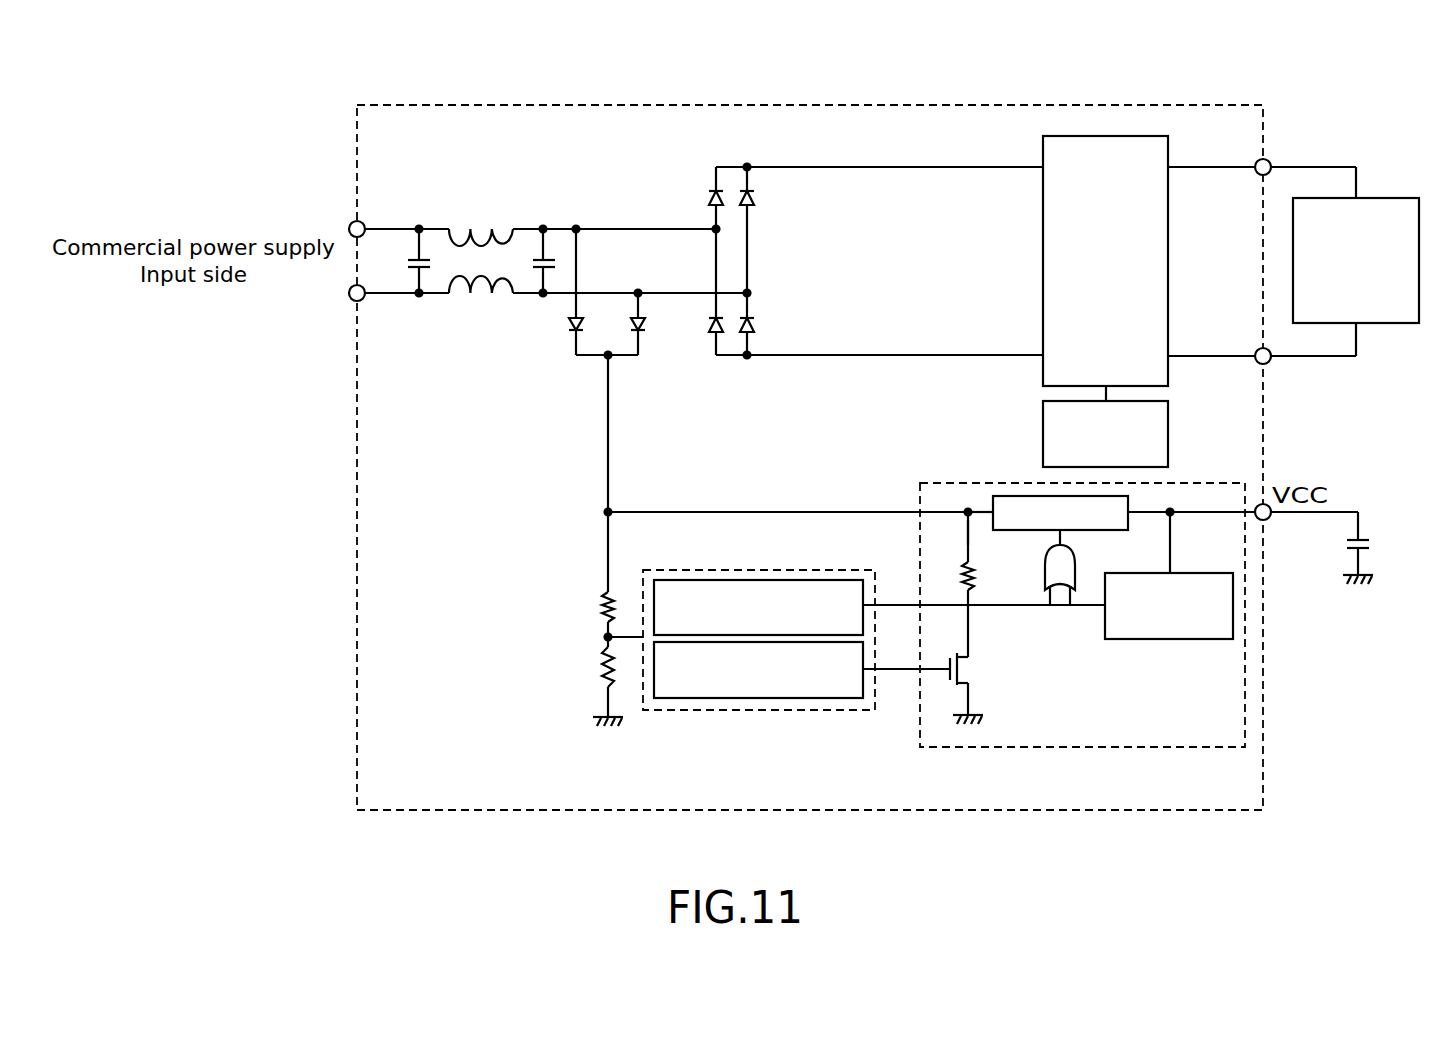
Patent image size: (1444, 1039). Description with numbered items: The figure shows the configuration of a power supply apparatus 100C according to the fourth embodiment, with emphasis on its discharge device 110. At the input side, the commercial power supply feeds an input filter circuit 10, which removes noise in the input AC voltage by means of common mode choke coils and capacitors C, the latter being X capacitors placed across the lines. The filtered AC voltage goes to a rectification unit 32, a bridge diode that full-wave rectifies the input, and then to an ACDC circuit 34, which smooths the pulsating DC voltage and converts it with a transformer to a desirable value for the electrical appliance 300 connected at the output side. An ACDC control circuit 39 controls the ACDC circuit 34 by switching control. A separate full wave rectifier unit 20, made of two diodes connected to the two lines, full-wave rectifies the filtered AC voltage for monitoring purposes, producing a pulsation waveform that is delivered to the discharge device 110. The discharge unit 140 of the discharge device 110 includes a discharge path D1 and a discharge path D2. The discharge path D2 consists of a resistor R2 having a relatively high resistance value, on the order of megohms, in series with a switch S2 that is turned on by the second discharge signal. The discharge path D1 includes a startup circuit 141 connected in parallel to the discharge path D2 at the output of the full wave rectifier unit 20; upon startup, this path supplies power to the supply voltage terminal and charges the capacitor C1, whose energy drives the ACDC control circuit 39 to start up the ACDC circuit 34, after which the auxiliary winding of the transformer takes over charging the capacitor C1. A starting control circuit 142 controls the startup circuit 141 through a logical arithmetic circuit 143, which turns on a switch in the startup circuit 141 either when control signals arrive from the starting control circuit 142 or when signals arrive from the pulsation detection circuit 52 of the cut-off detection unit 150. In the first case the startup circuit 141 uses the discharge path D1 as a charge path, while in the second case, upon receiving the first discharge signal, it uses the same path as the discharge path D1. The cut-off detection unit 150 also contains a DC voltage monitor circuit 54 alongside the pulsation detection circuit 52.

The power supply apparatus 100C is at (852, 105).
The input filter circuit 10 is at (483, 203).
The capacitor C is at (418, 268).
The full wave rectifier unit 20 is at (563, 352).
The rectification unit 32 is at (768, 228).
The ACDC circuit 34 is at (1043, 258).
The ACDC control circuit 39 is at (1043, 422).
The electrical appliance 300 is at (1392, 198).
The discharge device 110 is at (792, 487).
The discharge unit 140 is at (1080, 747).
The startup circuit 141 is at (993, 505).
The discharge path D1 is at (1208, 498).
The capacitor C1 is at (1362, 540).
The starting control circuit 142 is at (1233, 605).
The logical arithmetic circuit 143 is at (1078, 548).
The resistor R2 is at (975, 580).
The discharge path D2 is at (954, 533).
The switch S2 is at (963, 668).
The cut-off detection unit 150 is at (803, 710).
The pulsation detection circuit 52 is at (700, 580).
The DC voltage monitor circuit 54 is at (697, 698).